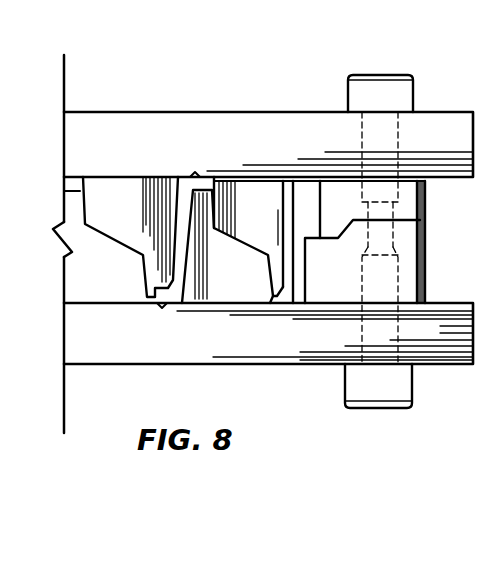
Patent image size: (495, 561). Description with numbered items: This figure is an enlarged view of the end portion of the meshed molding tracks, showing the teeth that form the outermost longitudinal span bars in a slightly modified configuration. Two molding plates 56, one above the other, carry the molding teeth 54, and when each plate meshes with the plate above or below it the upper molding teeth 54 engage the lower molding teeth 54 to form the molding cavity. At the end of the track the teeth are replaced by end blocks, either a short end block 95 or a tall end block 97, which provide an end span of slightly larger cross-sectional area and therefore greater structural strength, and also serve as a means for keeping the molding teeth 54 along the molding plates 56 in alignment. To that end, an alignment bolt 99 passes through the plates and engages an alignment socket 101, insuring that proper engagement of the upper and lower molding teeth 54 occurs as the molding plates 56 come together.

The molding teeth 54 is at (263, 208).
The molding plates 56 is at (300, 154).
The short end blocks 95 is at (348, 210).
The tall end blocks 97 is at (342, 277).
The alignment bolts 99 is at (400, 103).
The alignment sockets 101 is at (398, 280).